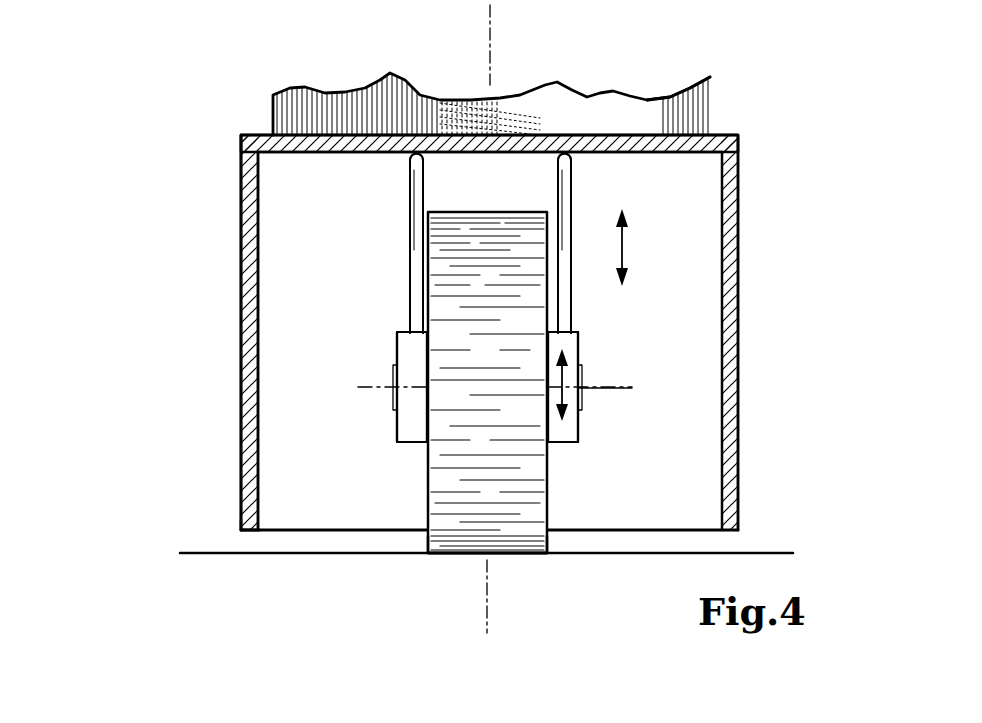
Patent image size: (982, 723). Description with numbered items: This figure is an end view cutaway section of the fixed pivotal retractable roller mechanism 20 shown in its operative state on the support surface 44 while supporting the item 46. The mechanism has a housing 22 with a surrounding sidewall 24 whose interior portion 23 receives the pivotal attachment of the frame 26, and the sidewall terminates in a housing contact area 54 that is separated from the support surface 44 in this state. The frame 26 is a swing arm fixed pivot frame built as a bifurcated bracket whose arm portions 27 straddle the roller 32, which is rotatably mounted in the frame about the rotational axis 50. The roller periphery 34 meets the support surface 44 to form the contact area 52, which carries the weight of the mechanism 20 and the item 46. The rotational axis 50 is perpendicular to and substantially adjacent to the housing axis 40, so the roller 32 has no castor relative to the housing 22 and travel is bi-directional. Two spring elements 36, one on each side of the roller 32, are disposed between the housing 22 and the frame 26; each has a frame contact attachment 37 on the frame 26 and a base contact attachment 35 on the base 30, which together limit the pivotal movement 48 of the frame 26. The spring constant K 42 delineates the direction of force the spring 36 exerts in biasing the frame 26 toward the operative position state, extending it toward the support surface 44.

The fixed pivotal retractable roller mechanism 20 is at (200, 190).
The housing 22 is at (742, 137).
The interior portion 23 is at (260, 374).
The surrounding sidewall 24 is at (740, 456).
The frame 26 is at (397, 376).
The arm portions 27 is at (397, 425).
The base 30 is at (332, 137).
The roller 32 is at (453, 533).
The roller periphery 34 is at (503, 212).
The base contact attachment 35 is at (415, 150).
The spring element 36 is at (408, 197).
The frame contact attachment 37 is at (400, 333).
The housing axis 40 is at (488, 22).
The spring constant K 42 is at (625, 247).
The support surface 44 is at (265, 556).
The item 46 is at (683, 90).
The pivotal movement 48 is at (577, 378).
The rotational axis 50 is at (603, 390).
The contact area 52 is at (510, 554).
The housing contact area 54 is at (249, 531).